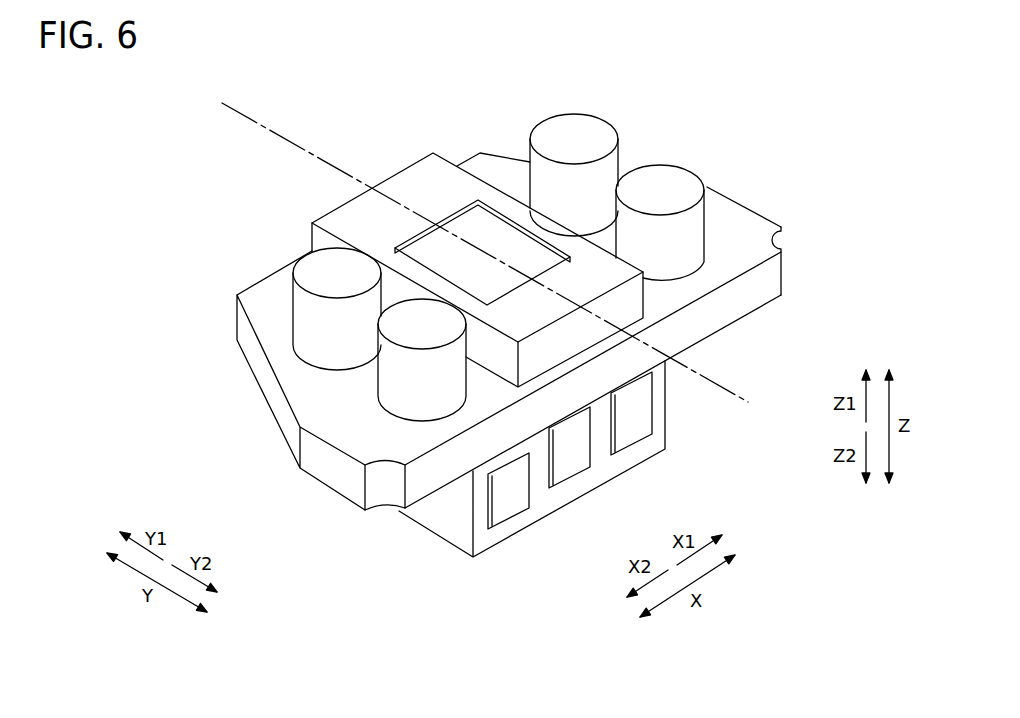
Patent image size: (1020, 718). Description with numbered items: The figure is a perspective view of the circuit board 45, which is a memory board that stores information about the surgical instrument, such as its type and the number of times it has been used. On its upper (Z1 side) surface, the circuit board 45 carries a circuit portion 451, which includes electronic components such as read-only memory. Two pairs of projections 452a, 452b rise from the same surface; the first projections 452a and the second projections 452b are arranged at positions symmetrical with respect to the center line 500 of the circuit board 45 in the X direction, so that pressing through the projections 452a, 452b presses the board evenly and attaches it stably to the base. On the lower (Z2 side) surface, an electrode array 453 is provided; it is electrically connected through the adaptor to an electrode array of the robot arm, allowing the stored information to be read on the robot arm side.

The circuit board 45 is at (263, 365).
The circuit portion 451 is at (416, 190).
The first projection 452a is at (338, 274).
The second projection 452b is at (667, 191).
The electrode array 453 is at (636, 480).
The center line 500 is at (282, 138).